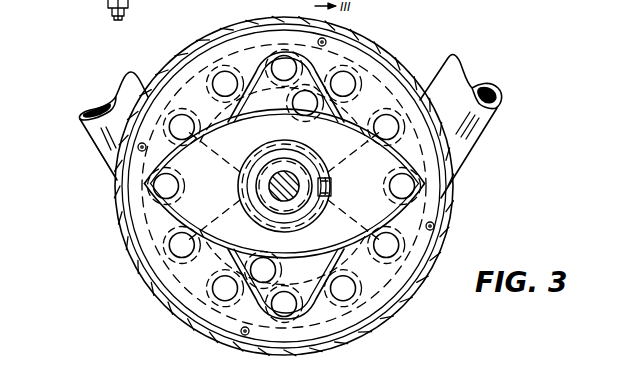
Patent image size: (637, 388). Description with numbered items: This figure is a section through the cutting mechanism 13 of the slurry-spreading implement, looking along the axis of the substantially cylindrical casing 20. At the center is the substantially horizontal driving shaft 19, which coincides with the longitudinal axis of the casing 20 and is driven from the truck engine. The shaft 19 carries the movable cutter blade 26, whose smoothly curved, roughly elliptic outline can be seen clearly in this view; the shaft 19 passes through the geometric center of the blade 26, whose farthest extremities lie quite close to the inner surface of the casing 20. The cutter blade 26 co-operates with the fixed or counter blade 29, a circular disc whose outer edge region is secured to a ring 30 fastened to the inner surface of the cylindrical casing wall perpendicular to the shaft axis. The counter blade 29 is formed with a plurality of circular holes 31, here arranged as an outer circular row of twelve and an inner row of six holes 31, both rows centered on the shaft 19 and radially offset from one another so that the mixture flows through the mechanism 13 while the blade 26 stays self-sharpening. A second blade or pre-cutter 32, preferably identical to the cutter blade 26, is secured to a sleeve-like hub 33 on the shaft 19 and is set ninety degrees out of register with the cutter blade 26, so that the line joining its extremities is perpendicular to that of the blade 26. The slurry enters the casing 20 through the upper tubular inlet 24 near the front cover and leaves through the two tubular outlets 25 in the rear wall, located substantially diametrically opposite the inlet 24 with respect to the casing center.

The cutting mechanism 13 is at (173, 319).
The driving shaft 19 is at (280, 171).
The casing 20 is at (124, 242).
The upper tubular inlet 24 is at (331, 178).
The tubular outlets 25 is at (86, 128).
The cutter blade 26 is at (242, 94).
The fixed or counter blade 29 is at (452, 197).
The ring 30 is at (421, 55).
The circular holes 31 is at (196, 292).
The blade or pre-cutter 32 is at (176, 208).
The sleeve-like hub 33 is at (246, 160).